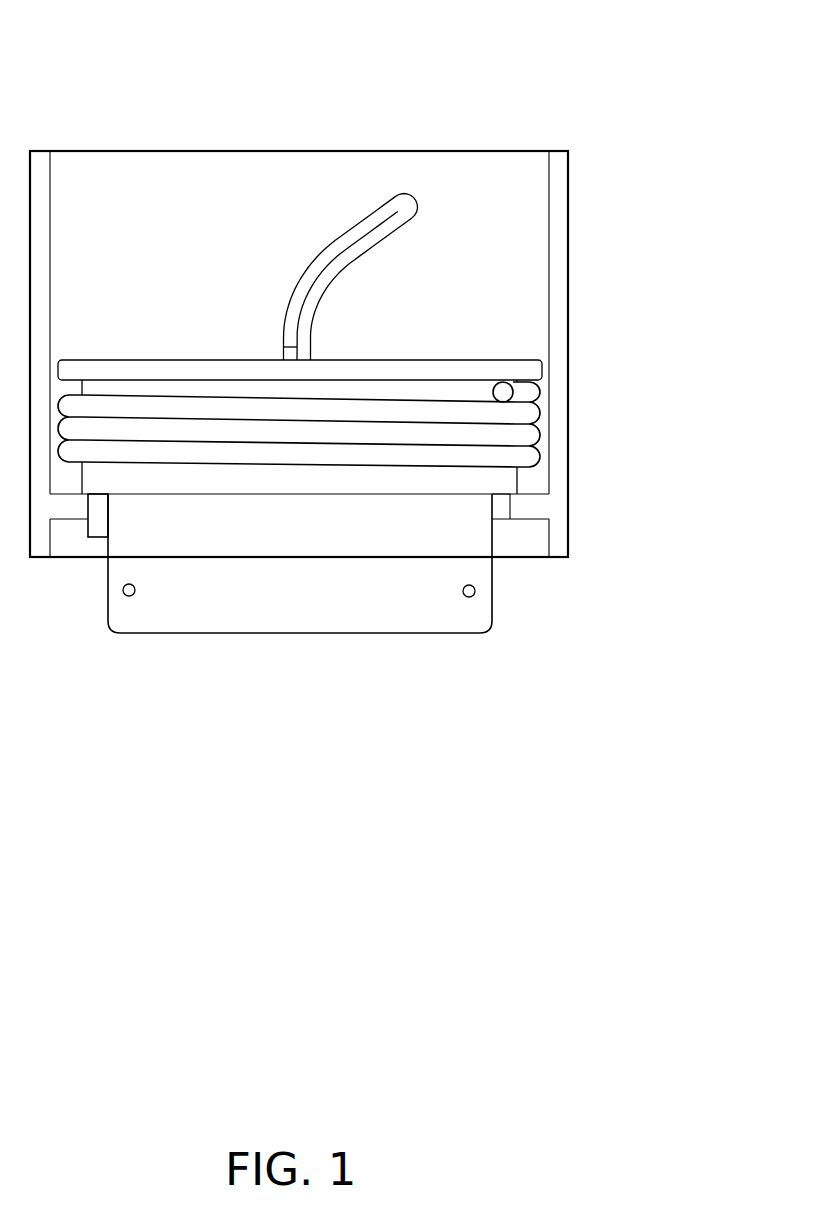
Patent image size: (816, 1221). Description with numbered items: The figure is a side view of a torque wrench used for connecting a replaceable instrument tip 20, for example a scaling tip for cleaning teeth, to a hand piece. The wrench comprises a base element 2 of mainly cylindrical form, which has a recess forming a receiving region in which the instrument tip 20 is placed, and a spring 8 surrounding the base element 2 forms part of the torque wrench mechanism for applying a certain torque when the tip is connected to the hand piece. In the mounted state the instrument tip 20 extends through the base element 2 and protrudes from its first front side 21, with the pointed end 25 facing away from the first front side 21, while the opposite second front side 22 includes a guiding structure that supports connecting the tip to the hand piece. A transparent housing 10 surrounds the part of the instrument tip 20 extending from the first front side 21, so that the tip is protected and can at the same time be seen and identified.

The transparent housing 10 is at (537, 175).
The first front side 21 is at (465, 343).
The spring 8 is at (528, 413).
The replaceable instrument tip 20 is at (340, 249).
The pointed end 25 is at (412, 200).
The base element 2 is at (463, 569).
The second front side 22 is at (215, 642).